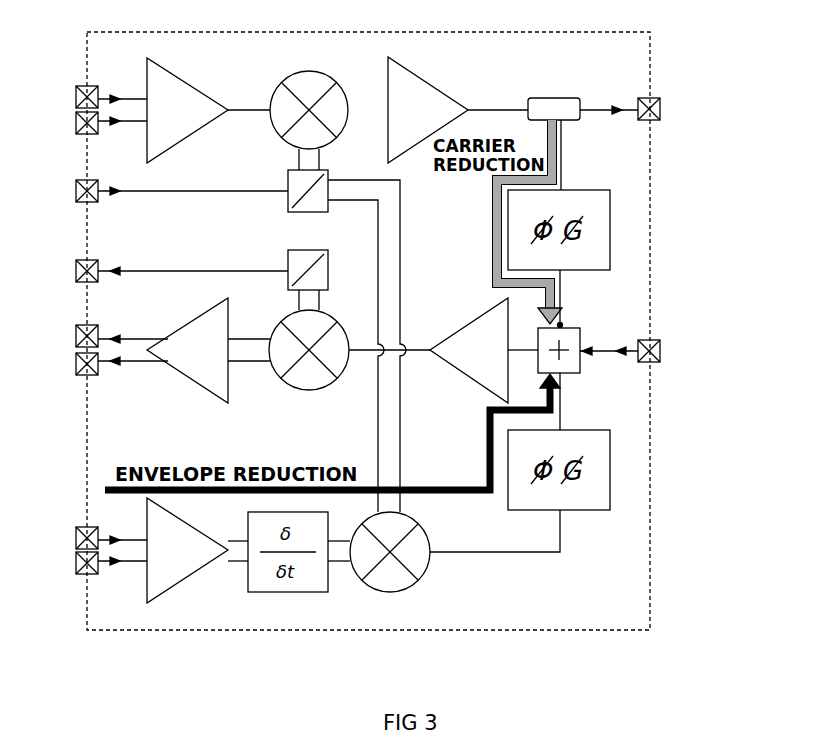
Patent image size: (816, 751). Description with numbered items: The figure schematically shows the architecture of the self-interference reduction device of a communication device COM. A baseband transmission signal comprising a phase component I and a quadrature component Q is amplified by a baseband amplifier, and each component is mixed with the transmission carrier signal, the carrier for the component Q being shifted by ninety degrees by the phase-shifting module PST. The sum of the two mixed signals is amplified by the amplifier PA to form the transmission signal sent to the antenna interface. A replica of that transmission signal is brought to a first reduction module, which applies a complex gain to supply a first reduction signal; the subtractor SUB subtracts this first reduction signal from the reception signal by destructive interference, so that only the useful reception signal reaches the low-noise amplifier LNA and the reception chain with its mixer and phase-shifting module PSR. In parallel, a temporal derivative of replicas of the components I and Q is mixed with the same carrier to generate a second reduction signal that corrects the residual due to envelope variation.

The communication device COM is at (380, 345).
The component I is at (76, 90).
The component Q is at (76, 128).
The phase-shifting module PST is at (293, 192).
The phase-shifting module PSR is at (293, 270).
The amplifier PA is at (428, 110).
The subtractor SUB is at (580, 333).
The low-noise amplifier LNA is at (469, 350).